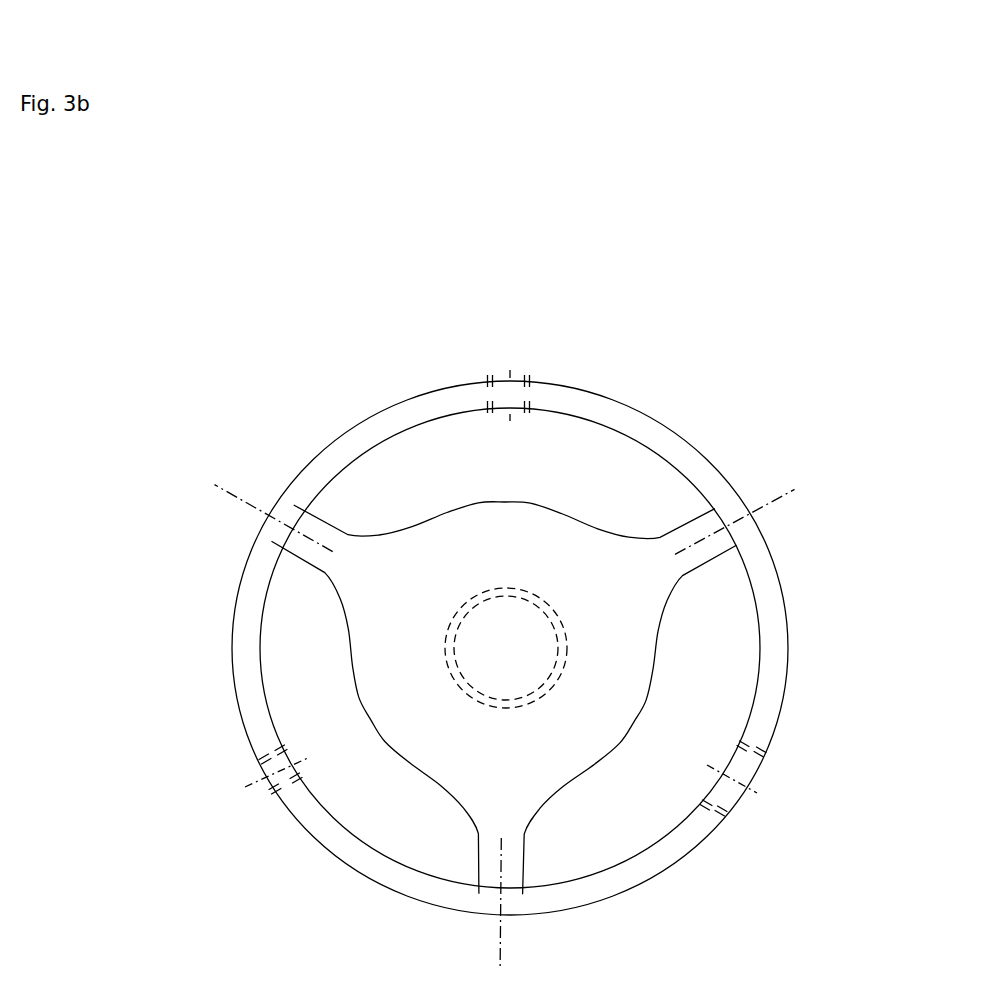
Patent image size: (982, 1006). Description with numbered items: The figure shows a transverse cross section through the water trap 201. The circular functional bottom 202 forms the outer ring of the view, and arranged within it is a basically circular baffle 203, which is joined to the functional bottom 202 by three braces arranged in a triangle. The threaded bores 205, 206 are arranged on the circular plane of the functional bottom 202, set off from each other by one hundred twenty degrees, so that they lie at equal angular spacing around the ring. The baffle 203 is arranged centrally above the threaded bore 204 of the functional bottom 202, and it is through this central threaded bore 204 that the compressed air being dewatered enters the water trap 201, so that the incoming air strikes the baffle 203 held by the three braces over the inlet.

The water trap 201 is at (906, 551).
The functional bottom 202 is at (383, 420).
The baffle 203 is at (508, 538).
The threaded bore 204 is at (450, 650).
The threaded bore 205 is at (512, 395).
The threaded bore 206 is at (735, 777).